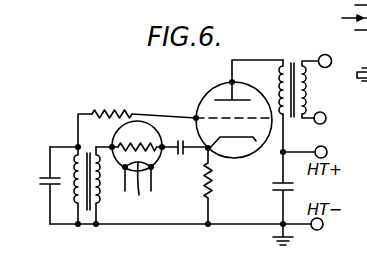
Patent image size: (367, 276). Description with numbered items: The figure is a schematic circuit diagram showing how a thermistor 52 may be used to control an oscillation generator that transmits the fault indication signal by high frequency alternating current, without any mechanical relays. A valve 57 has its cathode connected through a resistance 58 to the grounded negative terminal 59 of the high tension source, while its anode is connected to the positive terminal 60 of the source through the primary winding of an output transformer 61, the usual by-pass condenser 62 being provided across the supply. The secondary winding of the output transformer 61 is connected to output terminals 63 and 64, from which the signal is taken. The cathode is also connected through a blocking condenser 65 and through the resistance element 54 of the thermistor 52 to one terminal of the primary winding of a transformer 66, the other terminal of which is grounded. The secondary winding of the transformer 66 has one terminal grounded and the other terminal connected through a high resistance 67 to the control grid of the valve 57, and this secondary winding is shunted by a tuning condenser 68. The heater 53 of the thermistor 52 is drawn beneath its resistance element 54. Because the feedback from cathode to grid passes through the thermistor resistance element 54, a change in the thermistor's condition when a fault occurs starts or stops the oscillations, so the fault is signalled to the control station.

The thermistor 52 is at (143, 119).
The heater/filament of valve 52 53 is at (137, 190).
The resistance element 54 is at (140, 143).
The valve 57 is at (251, 84).
The resistance 58 is at (222, 185).
The negative terminal 59 is at (311, 231).
The positive terminal 60 is at (318, 153).
The output transformer 61 is at (292, 57).
The by-pass condenser 62 is at (269, 188).
The output terminal 63 is at (324, 51).
The output terminal 64 is at (333, 122).
The blocking condenser 65 is at (185, 164).
The transformer 66 is at (89, 226).
The high resistance 67 is at (112, 102).
The tuning condenser 68 is at (36, 185).